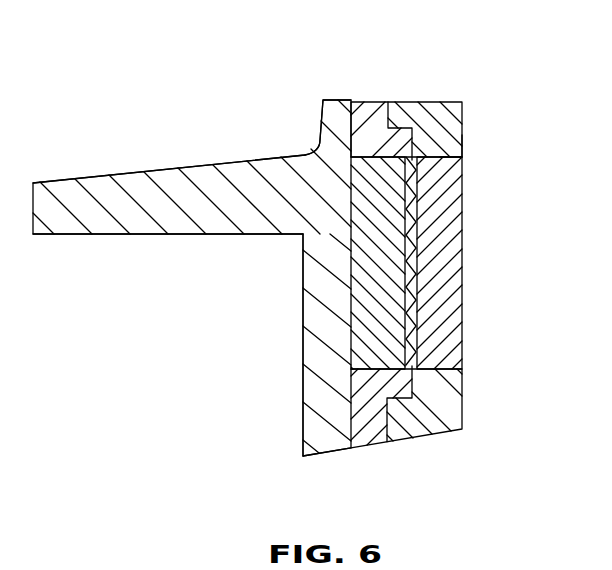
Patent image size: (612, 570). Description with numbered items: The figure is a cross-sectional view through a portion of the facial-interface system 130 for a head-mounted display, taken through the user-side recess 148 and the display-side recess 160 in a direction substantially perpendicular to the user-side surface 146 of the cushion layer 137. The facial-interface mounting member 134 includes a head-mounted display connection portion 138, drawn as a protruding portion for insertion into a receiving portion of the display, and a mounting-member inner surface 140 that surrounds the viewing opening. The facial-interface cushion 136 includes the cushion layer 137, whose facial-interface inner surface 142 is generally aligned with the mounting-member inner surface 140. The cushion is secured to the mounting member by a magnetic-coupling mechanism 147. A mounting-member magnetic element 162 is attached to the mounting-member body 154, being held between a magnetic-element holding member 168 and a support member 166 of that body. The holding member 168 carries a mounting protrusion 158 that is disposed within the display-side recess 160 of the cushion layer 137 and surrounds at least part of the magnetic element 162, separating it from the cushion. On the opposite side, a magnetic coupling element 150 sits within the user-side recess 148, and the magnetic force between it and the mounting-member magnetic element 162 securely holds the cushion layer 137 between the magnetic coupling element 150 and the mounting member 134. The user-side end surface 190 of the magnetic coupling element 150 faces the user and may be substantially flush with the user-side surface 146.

The facial-interface system 130 is at (193, 60).
The facial-interface mounting member 134 is at (290, 173).
The facial-interface cushion 136 is at (432, 113).
The cushion layer 137 is at (452, 115).
The head-mounted display connection portion 138 is at (143, 193).
The mounting-member inner surface 140 is at (327, 452).
The facial-interface inner surface 142 is at (453, 431).
The user-side surface 146 is at (463, 405).
The magnetic-coupling mechanism 147 is at (491, 354).
The user-side recess 148 is at (447, 148).
The magnetic coupling element 150 is at (445, 203).
The mounting-member body 154 is at (337, 108).
The mounting protrusion 158 is at (397, 394).
The display-side recess 160 is at (401, 121).
The mounting-member magnetic element 162 is at (355, 289).
The support member 166 is at (312, 392).
The magnetic-element holding member 168 is at (367, 430).
The user-side end surface 190 is at (463, 266).